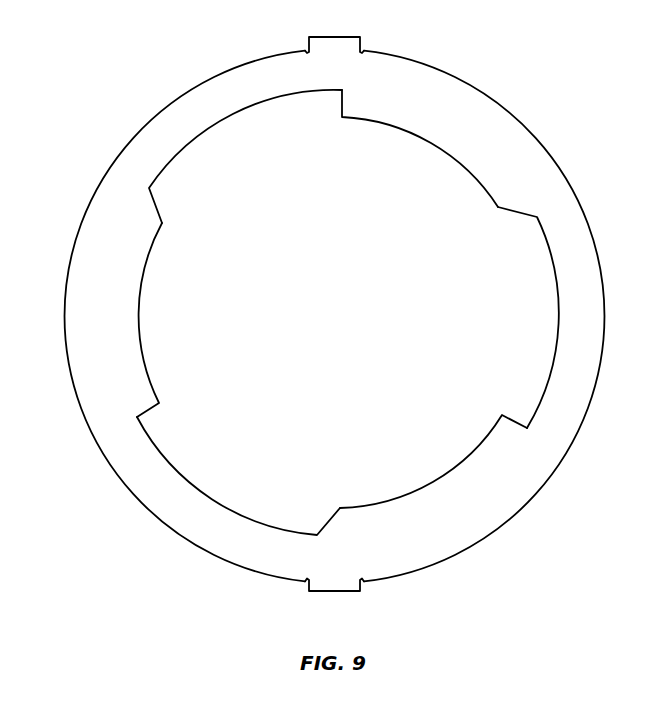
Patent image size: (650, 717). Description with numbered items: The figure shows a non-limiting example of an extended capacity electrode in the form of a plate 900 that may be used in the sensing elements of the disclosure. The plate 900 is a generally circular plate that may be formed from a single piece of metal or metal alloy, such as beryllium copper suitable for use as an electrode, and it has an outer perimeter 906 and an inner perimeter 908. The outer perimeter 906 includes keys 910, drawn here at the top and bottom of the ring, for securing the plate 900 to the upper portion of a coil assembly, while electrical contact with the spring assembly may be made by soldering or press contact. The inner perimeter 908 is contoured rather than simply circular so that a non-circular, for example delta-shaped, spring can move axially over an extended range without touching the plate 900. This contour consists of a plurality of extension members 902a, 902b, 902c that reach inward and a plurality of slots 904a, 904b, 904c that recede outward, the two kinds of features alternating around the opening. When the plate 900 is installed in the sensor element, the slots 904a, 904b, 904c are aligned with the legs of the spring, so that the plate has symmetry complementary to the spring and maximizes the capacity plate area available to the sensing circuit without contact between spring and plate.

The plate 900 is at (123, 77).
The outer perimeter 906 is at (118, 156).
The keys 910 is at (333, 36).
The inner perimeter 908 is at (138, 313).
The extension member 902a is at (437, 147).
The extension member 902b is at (148, 370).
The extension member 902c is at (433, 480).
The slot 904a is at (218, 122).
The slot 904b is at (205, 492).
The slot 904c is at (558, 325).